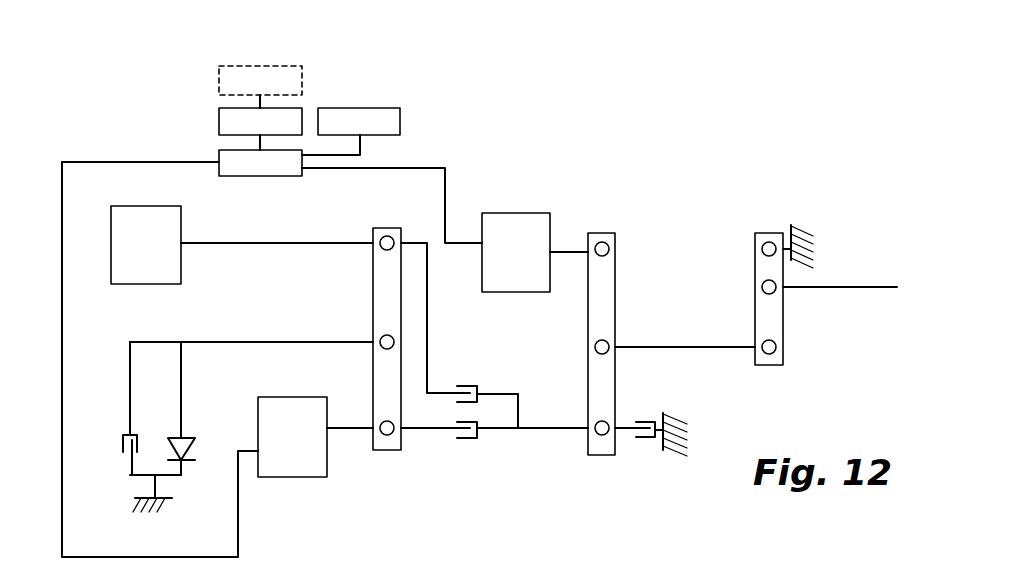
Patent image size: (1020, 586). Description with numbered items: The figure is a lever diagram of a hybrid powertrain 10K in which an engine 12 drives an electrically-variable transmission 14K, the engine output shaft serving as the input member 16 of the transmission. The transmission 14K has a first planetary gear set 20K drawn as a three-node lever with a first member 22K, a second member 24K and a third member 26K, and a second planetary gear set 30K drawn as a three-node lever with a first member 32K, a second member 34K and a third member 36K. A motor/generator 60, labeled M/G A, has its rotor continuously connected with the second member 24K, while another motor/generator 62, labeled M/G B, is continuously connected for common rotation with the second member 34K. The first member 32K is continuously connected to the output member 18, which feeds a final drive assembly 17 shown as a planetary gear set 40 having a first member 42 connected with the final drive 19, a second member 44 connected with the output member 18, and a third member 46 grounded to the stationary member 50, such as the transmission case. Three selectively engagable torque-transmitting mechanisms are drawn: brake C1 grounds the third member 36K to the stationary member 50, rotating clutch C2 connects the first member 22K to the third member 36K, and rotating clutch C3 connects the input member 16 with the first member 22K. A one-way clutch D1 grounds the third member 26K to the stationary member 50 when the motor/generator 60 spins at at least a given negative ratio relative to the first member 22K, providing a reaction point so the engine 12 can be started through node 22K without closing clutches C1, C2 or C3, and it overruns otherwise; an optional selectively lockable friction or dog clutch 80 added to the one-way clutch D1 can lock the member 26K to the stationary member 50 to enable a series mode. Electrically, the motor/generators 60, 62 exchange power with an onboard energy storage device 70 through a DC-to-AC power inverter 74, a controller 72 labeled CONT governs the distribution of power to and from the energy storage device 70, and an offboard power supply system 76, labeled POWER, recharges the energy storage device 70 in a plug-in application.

The powertrain 10K is at (840, 252).
The engine 12 is at (146, 245).
The transmission 14K is at (139, 138).
The input member 16 is at (252, 246).
The final drive unit or assembly 17 is at (740, 248).
The output member 18 is at (700, 350).
The final drive 19 is at (840, 290).
The first planetary gear set 20K is at (373, 270).
The first member 22K is at (387, 236).
The second member 24K is at (386, 435).
The third member 26K is at (381, 338).
The second planetary gear set 30K is at (615, 262).
The first member 32K is at (608, 343).
The second member 34K is at (600, 241).
The third member 36K is at (600, 436).
The planetary gear set 40 is at (755, 272).
The first member 42 is at (783, 290).
The second member 44 is at (776, 347).
The third member 46 is at (766, 242).
The stationary member 50 is at (672, 455).
The motor/generator 60 is at (292, 478).
The motor/generator 62 is at (515, 213).
The energy storage device 70 is at (219, 108).
The controller 72 is at (360, 108).
The power inverter 74 is at (219, 150).
The offboard power supply system 76 is at (258, 63).
The selectively lockable friction or dog clutch 80 is at (118, 466).
The brake or clutch C1 is at (638, 412).
The clutch C2 is at (470, 445).
The clutch C3 is at (468, 372).
The one-way clutch D1 is at (192, 428).